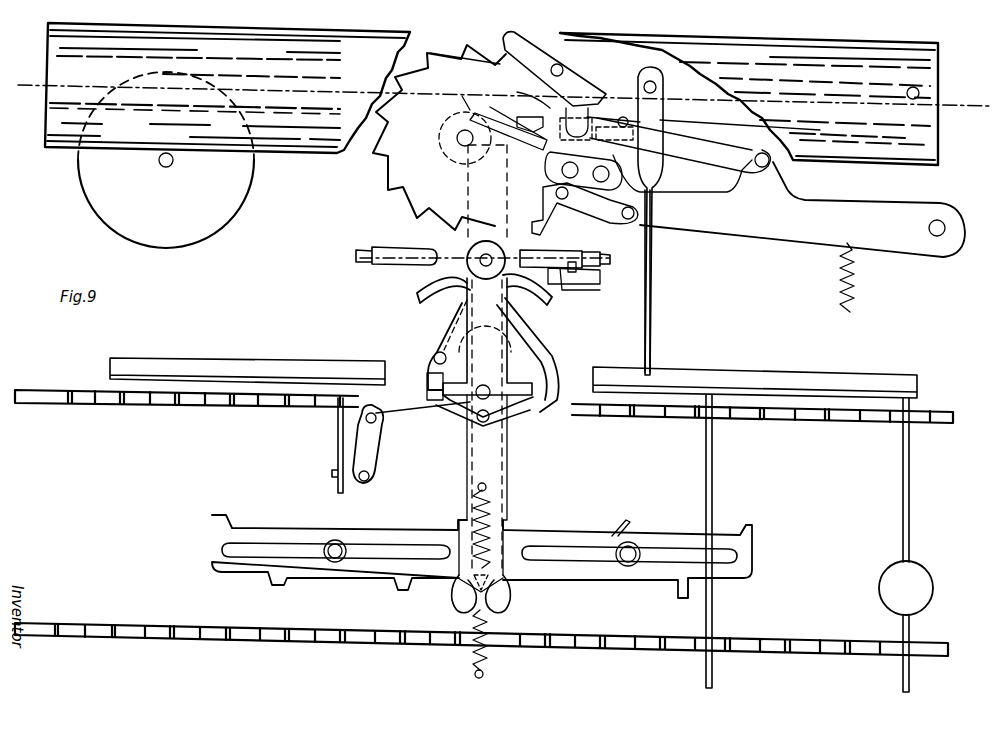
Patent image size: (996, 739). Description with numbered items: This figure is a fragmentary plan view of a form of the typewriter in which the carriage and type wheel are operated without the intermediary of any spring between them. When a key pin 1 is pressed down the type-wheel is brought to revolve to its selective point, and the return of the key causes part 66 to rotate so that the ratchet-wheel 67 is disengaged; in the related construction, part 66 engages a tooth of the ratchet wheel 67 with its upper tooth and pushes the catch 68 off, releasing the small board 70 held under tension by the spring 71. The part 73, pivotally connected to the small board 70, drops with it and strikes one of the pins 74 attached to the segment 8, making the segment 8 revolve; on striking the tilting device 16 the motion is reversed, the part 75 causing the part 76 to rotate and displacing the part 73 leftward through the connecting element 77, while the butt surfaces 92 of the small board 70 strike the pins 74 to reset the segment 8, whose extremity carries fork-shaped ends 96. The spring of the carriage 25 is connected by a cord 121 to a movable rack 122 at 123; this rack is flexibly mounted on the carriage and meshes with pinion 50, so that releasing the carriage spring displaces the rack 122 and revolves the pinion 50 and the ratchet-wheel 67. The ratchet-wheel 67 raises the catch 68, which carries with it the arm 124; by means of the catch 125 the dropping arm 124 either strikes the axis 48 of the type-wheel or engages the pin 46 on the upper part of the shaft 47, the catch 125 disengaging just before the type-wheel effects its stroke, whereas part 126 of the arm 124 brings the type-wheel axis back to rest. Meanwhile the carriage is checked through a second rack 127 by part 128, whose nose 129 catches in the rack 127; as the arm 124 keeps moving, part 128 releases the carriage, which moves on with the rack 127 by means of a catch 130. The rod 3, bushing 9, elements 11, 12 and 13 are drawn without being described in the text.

The key pin 1 is at (712, 490).
The connecting rod 3 is at (649, 330).
The segment 8 is at (425, 302).
The bushing 9 is at (480, 255).
The spring seat 11 is at (480, 594).
The slotted bar 12 is at (276, 512).
The bar tabs 13 is at (752, 527).
The right hand tilting device 16 is at (280, 366).
The carriage 25 is at (207, 230).
The pin 46 is at (590, 272).
The shaft 47 is at (408, 253).
The axis of the type-wheel 48 is at (515, 283).
The pinion 50 is at (445, 148).
The part engaging the ratchet wheel 66 is at (593, 78).
The ratchet wheel 67 is at (445, 60).
The catch 68 is at (586, 110).
The small board 70 is at (462, 96).
The spring 71 is at (472, 494).
The part pivoted to the small board 73 is at (455, 322).
The pins 74 is at (436, 392).
The part causing rotation 75 is at (338, 448).
The rotating part 76 is at (372, 452).
The connecting element 77 is at (425, 425).
The butt surfaces 92 is at (495, 416).
The fork-shaped ends 96 is at (452, 606).
The cord 121 is at (267, 76).
The movable rack 122 is at (921, 128).
The connection point 123 is at (919, 90).
The arm 124 is at (787, 228).
The catch 125 is at (552, 222).
The part of arm 126 is at (553, 278).
The second rack 127 is at (875, 126).
The checking part 128 is at (703, 150).
The nose 129 is at (478, 112).
The catch 130 is at (520, 105).